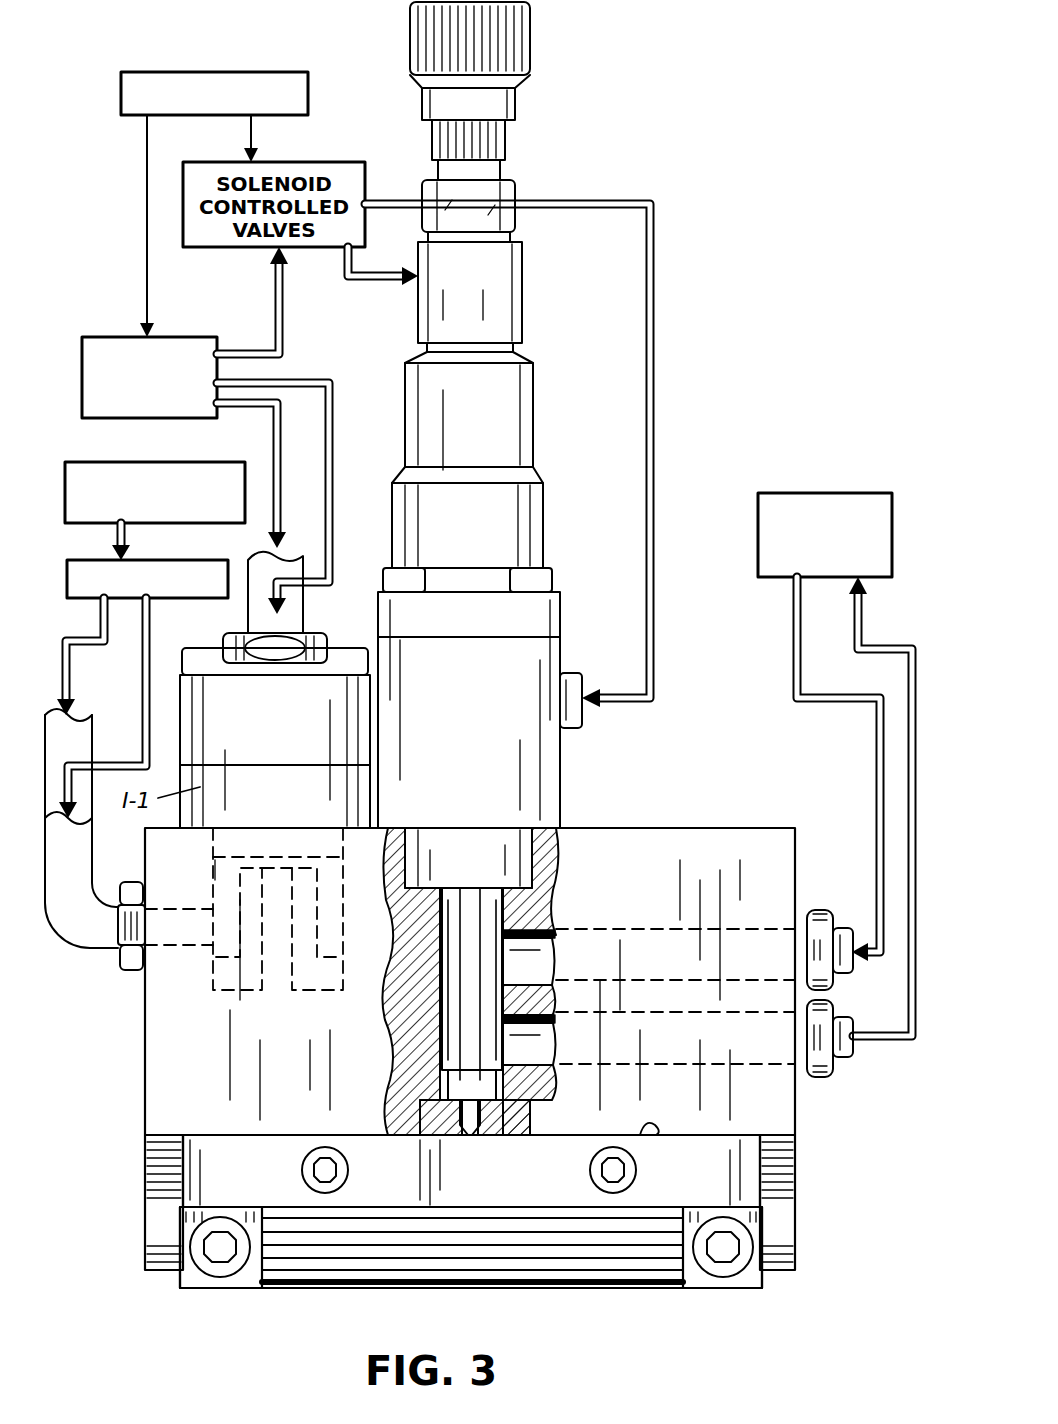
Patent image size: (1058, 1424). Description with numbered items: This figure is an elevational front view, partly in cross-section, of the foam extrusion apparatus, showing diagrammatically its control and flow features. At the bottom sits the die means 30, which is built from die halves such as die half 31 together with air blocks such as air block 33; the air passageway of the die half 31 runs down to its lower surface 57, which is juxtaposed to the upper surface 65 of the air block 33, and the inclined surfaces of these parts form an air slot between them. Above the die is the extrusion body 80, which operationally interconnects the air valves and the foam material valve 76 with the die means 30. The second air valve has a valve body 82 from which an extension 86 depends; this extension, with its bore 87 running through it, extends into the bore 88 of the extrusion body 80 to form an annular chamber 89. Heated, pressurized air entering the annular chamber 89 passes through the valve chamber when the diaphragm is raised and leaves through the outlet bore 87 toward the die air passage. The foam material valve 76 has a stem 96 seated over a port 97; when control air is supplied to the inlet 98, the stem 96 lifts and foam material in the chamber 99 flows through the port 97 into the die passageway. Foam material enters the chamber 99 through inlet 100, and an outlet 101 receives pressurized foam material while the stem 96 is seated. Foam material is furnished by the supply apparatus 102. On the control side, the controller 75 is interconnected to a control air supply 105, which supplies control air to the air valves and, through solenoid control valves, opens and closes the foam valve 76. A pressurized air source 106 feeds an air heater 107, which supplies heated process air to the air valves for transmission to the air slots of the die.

The controller 75 is at (121, 108).
The control air supply 105 is at (99, 336).
The pressurized air source 106 is at (157, 461).
The air heater 107 is at (155, 560).
The foam material supplying apparatus 102 is at (828, 492).
The foam material valve 76 is at (545, 608).
The inlet 98 is at (582, 703).
The extrusion body 80 is at (703, 842).
The valve body 82 is at (298, 804).
The extension 86 is at (212, 893).
The bore 87 is at (278, 960).
The bore 88 is at (213, 953).
The annular chamber 89 is at (328, 957).
The stem 96 is at (470, 930).
The chamber 99 is at (452, 908).
The port 97 is at (467, 1135).
The inlet 100 is at (612, 931).
The outlet 101 is at (602, 1060).
The die half 31 is at (272, 1166).
The die means 30 is at (326, 1266).
The air block 33 is at (535, 1270).
The lower surface 57 is at (698, 1143).
The upper surface 65 is at (660, 1140).